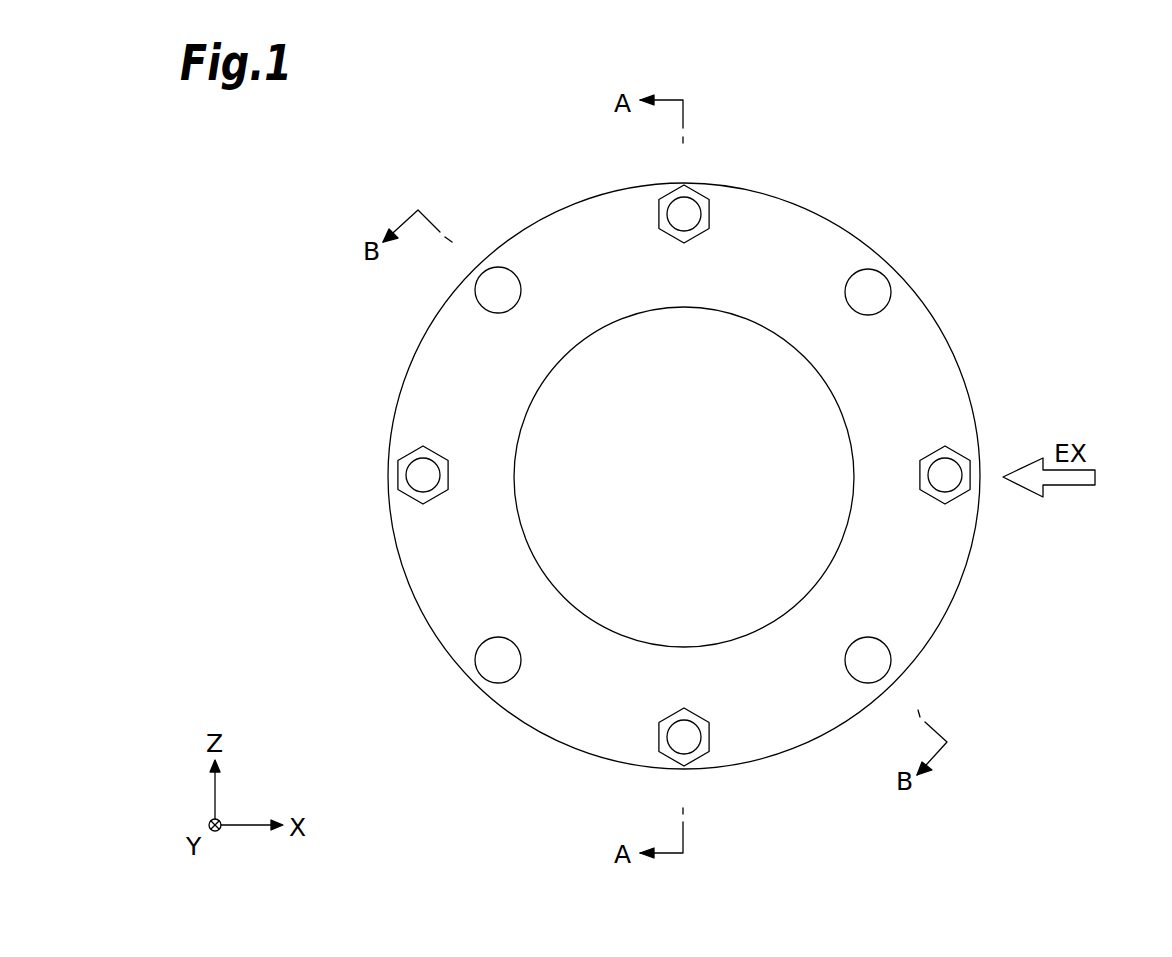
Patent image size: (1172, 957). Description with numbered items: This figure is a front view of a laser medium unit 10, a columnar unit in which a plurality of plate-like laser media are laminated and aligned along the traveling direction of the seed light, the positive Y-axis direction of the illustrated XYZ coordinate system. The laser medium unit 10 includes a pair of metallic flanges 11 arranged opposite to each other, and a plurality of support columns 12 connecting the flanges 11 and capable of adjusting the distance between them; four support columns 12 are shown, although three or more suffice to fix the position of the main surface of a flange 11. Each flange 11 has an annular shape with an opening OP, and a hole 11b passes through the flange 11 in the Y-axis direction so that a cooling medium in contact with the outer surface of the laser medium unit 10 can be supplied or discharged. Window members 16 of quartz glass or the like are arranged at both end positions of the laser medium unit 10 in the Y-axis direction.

The laser medium unit 10 is at (680, 483).
The flange 11 is at (565, 702).
The hole 11b is at (498, 268).
The support column 12 is at (698, 192).
The window member 16 is at (593, 508).
The opening OP is at (745, 633).